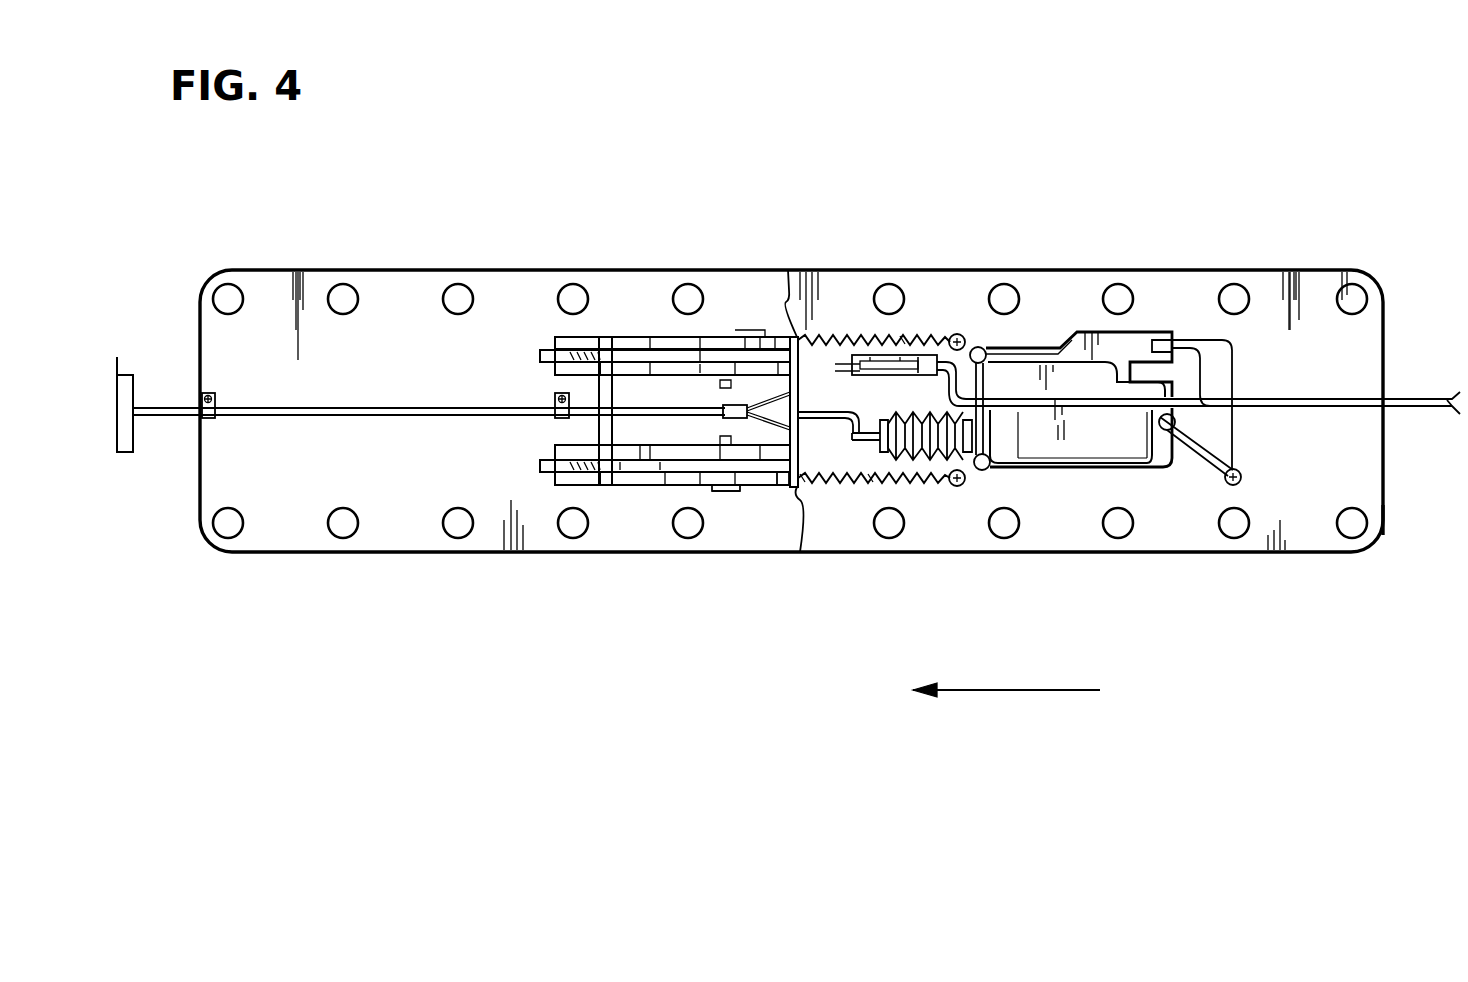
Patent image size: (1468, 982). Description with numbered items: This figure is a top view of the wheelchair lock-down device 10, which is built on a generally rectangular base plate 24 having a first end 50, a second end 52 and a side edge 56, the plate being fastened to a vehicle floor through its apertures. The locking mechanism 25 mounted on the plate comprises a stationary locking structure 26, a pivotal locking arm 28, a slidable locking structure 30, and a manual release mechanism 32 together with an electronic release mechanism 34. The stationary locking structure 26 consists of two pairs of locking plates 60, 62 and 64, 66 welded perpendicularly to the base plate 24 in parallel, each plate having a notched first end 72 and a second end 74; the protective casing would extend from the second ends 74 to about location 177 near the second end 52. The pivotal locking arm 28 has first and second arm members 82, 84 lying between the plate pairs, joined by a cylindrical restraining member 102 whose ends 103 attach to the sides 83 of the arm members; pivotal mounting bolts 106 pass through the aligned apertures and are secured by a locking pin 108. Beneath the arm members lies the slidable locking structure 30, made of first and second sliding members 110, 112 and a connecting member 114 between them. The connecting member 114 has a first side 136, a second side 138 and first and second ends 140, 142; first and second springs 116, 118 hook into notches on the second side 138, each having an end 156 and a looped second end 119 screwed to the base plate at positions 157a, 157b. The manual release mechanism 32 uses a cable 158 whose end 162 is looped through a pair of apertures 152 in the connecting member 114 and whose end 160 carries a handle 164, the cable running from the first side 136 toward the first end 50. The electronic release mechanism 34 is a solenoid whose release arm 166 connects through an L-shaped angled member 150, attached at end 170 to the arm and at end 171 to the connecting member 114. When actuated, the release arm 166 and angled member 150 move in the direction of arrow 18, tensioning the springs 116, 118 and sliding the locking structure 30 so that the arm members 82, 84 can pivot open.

The wheelchair lock-down device 10 is at (1237, 222).
The arrow 18 is at (1012, 692).
The base plate 24 is at (1193, 555).
The locking mechanism 25 is at (556, 340).
The stationary locking structure 26 is at (645, 346).
The pivotal locking arm 28 is at (540, 477).
The slidable locking structure 30 is at (690, 351).
The manual release mechanism 32 is at (124, 453).
The electronic release mechanism 34 is at (1080, 332).
The first end of base plate 50 is at (199, 500).
The second end of base plate 52 is at (1384, 520).
The side edge of base plate 56 is at (302, 269).
The locking plate 60 is at (562, 487).
The locking plate 62 is at (571, 449).
The locking plate 64 is at (569, 371).
The locking plate 66 is at (580, 350).
The first end of locking plate 72 is at (546, 466).
The second end of locking plate 74 is at (782, 488).
The first arm member 82 is at (634, 488).
The side of arm member 83 is at (660, 435).
The second arm member 84 is at (615, 352).
The restraining member 102 is at (612, 404).
The end of restraining member 103 is at (600, 486).
The pivotal mounting means 106 is at (706, 492).
The locking pin 108 is at (738, 444).
The first sliding member 110 is at (640, 487).
The second sliding member 112 is at (740, 356).
The connecting member 114 is at (822, 340).
The first spring 116 is at (912, 480).
The second spring 118 is at (905, 340).
The looped second end of spring 119 is at (960, 330).
The first side of connecting member 136 is at (729, 491).
The second side of connecting member 138 is at (805, 485).
The first end of connecting member 140 is at (800, 552).
The second end of connecting member 142 is at (788, 280).
The angled member 150 is at (878, 428).
The apertures in connecting member 152 is at (852, 366).
The end of spring 156 is at (950, 338).
The position on base plate 157a is at (983, 471).
The position on base plate 157b is at (977, 348).
The cable 158 is at (181, 406).
The end of cable 160 is at (138, 406).
The end of cable 162 is at (800, 420).
The handle 164 is at (116, 357).
The release arm 166 is at (870, 480).
The end of angled member 170 is at (855, 436).
The end of angled member 171 is at (848, 448).
The location on base plate 177 is at (1174, 283).